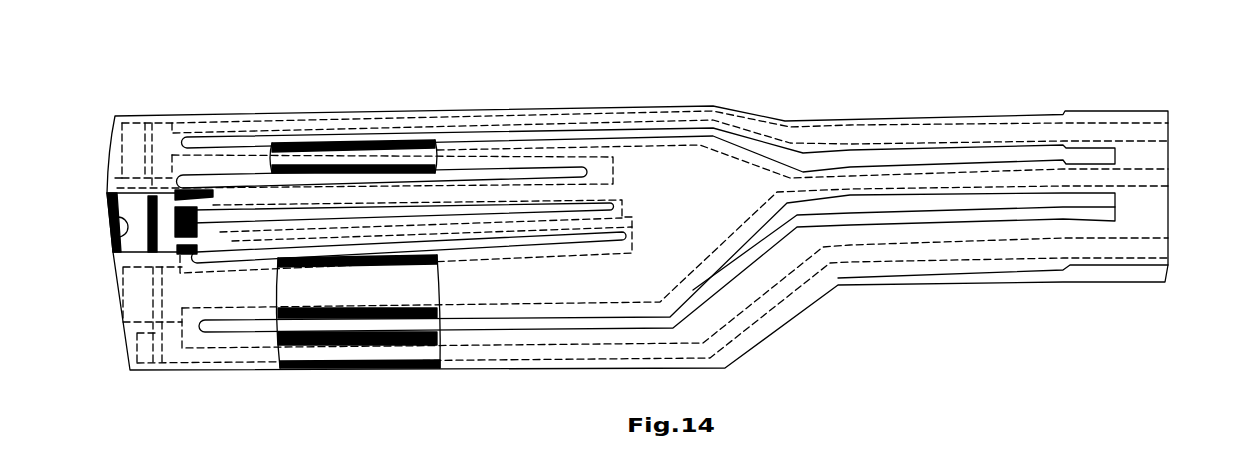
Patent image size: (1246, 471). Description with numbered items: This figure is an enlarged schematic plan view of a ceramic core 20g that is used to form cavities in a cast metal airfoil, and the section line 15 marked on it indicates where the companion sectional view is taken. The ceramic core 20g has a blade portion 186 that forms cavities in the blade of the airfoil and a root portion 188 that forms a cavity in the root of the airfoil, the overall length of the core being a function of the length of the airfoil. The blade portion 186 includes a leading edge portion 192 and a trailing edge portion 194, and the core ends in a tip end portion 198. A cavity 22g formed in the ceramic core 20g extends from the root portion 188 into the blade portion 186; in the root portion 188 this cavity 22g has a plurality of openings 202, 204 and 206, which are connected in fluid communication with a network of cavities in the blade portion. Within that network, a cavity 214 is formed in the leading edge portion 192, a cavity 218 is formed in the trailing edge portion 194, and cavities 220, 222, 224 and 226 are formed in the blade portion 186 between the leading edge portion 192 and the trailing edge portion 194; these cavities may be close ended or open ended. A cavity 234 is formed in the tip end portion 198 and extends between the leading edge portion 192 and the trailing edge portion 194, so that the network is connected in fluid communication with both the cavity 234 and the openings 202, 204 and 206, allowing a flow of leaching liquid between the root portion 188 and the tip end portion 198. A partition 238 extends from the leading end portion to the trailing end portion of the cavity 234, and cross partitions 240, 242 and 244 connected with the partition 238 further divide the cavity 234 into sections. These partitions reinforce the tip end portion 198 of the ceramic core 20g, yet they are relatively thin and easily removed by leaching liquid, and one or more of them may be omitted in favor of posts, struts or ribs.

The ceramic core 20g is at (767, 115).
The cavity 22g is at (683, 152).
The section line 15- 15 is at (382, 93).
The blade portion 186 is at (313, 113).
The root portion 188 is at (982, 115).
The leading edge portion 192 is at (587, 105).
The trailing edge portion 194 is at (543, 370).
The tip end portion 198 is at (120, 287).
The opening 202 is at (1168, 128).
The opening 204 is at (1168, 175).
The opening 206 is at (1168, 248).
The cavity 214 is at (507, 112).
The cavity 218 is at (318, 350).
The cavity 220 is at (395, 287).
The cavity 222 is at (623, 223).
The cavity 224 is at (605, 193).
The cavity 226 is at (417, 157).
The cavity 234 is at (110, 235).
The partition 238 is at (145, 140).
The cross partition 240 is at (112, 172).
The cross partition 242 is at (146, 256).
The cross partition 244 is at (145, 335).